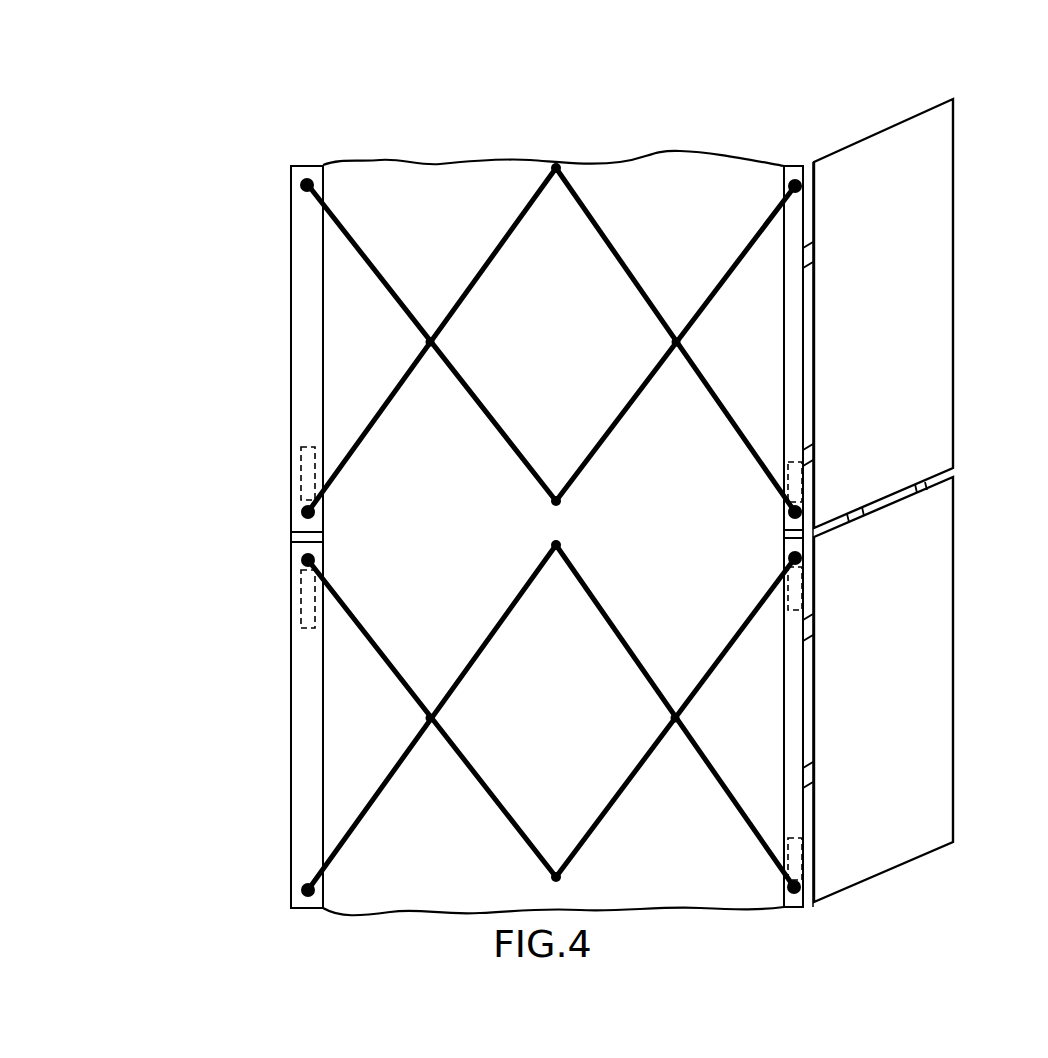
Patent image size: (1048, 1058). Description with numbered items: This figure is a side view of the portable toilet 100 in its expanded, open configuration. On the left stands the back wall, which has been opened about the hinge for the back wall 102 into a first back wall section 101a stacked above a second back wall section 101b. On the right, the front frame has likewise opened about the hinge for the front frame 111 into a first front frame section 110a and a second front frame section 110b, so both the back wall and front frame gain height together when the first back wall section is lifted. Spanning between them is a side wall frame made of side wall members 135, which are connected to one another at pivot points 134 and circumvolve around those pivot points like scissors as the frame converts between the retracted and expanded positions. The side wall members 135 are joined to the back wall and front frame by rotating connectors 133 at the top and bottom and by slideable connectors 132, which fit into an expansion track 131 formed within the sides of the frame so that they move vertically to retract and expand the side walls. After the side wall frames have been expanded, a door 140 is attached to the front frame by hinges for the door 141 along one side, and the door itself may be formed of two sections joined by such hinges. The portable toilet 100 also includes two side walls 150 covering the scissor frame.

The portable toilet 100 is at (243, 112).
The first back wall section 101a is at (291, 203).
The second back wall section 101b is at (291, 826).
The hinge for the back wall 102 is at (323, 537).
The first front frame section 110a is at (808, 162).
The second front frame section 110b is at (795, 907).
The hinge for the front frame 111 is at (784, 535).
The expansion track 131 is at (300, 585).
The slideable connector 132 is at (318, 512).
The rotating connector 133 is at (312, 180).
The pivot point 134 is at (432, 340).
The side wall member 135 is at (497, 255).
The door 140 is at (912, 250).
The hinges for the door 141 is at (814, 455).
The side wall 150 is at (633, 158).